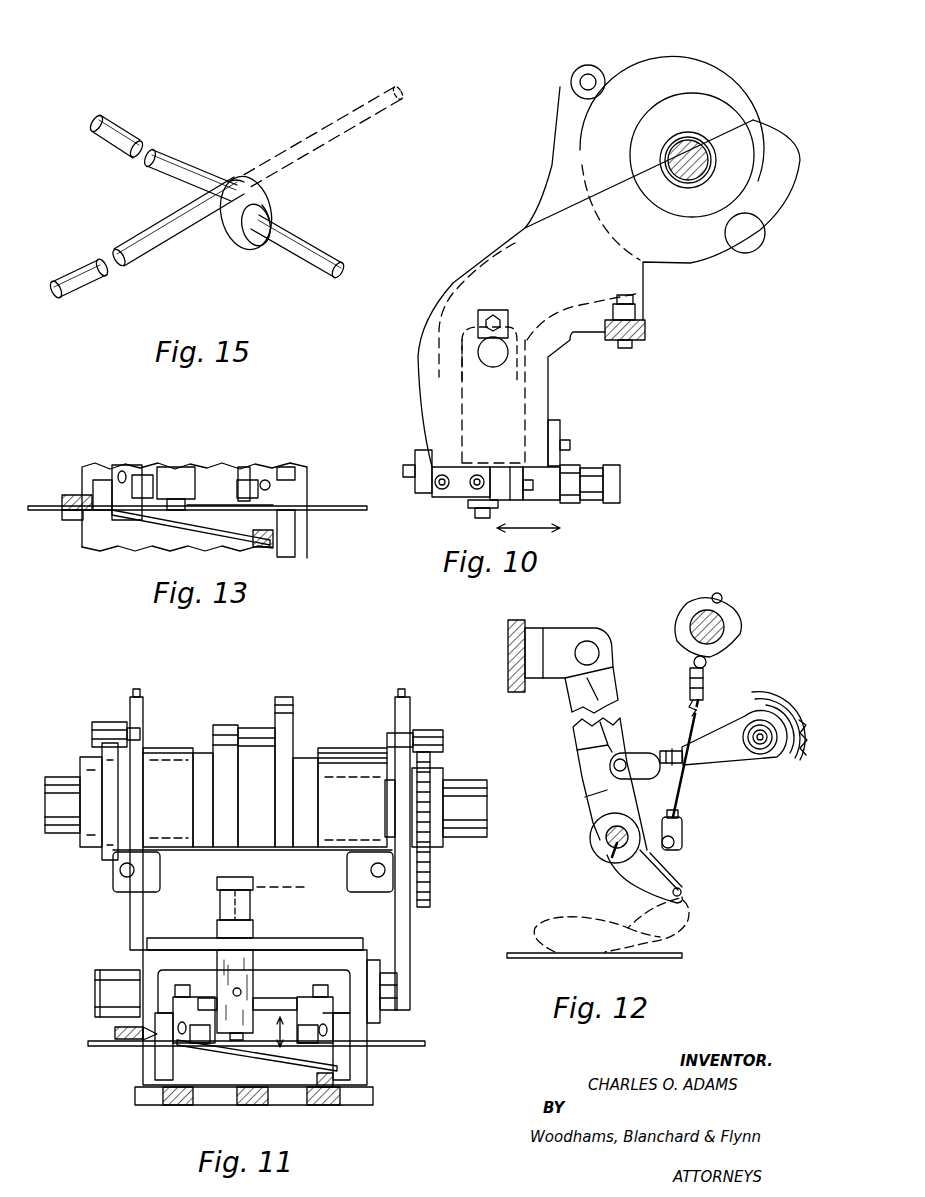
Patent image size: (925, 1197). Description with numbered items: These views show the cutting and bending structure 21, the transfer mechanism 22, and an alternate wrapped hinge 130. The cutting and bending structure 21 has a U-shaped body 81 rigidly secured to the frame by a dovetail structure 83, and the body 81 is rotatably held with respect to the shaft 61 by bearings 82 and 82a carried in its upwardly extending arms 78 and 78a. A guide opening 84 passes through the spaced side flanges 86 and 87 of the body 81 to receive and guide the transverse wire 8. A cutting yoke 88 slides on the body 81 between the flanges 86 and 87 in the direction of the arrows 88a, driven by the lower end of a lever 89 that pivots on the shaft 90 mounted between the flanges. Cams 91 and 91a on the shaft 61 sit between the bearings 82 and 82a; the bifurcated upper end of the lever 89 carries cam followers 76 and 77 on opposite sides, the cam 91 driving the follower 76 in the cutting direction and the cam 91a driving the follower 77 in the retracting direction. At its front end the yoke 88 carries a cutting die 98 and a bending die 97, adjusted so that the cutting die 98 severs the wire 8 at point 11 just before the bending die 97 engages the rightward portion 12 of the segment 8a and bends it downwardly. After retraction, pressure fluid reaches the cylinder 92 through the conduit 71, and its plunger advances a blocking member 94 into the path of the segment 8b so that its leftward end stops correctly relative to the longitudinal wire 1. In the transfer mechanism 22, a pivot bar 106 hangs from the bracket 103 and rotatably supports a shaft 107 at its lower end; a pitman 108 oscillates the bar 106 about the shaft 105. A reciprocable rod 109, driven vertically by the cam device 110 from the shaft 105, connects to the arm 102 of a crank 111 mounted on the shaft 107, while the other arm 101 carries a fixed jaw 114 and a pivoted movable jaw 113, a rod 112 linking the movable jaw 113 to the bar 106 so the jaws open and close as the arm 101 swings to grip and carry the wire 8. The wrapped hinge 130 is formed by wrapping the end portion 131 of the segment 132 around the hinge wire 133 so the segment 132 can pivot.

In FIG. 12, the longitudinal wire 1 is at (613, 960).
In FIG. 10, the transverse wire 8 is at (458, 495).
In FIG. 13, the transverse wire 8 is at (197, 508).
In FIG. 11, the transverse wire 8 is at (412, 1040).
In FIG. 12, the transverse wire 8 is at (553, 948).
In FIG. 13, the wire segment 8a is at (52, 513).
In FIG. 11, the wire segment 8a is at (100, 1047).
In FIG. 13, the wire segment 8b is at (332, 513).
In FIG. 11, the wire segment 8b is at (390, 1047).
In FIG. 11, the cutting point 11 is at (337, 1073).
In FIG. 13, the rightward portion of segment 12 is at (210, 527).
In FIG. 11, the rightward portion of segment 12 is at (260, 1030).
In FIG. 10, the cutting and bending structure 21 is at (498, 246).
In FIG. 11, the cutting and bending structure 21 is at (424, 927).
In FIG. 12, the transfer mechanism 22 is at (564, 741).
In FIG. 10, the shaft 61 is at (713, 157).
In FIG. 11, the shaft 61 is at (458, 797).
In FIG. 12, the shaft 61 is at (791, 718).
In FIG. 11, the conduit 71 is at (279, 887).
In FIG. 10, the cam follower 76 is at (585, 64).
In FIG. 10, the cam follower 77 is at (750, 240).
In FIG. 11, the cam follower 77 is at (223, 733).
In FIG. 11, the upwardly extending arm 78 is at (373, 814).
In FIG. 11, the upwardly extending arm 78a is at (190, 817).
In FIG. 10, the U-shaped body 81 is at (453, 283).
In FIG. 13, the U-shaped body 81 is at (315, 484).
In FIG. 11, the U-shaped body 81 is at (131, 903).
In FIG. 10, the bearing 82 is at (710, 123).
In FIG. 11, the bearing 82 is at (347, 758).
In FIG. 11, the bearing 82a is at (158, 748).
In FIG. 10, the dovetail structure 83 is at (556, 383).
In FIG. 13, the guide opening 84 is at (67, 502).
In FIG. 11, the guide opening 84 is at (110, 1040).
In FIG. 11, the side flange 86 is at (360, 968).
In FIG. 10, the side flange 87 is at (437, 317).
In FIG. 11, the side flange 87 is at (150, 987).
In FIG. 10, the cutting yoke 88 is at (513, 473).
In FIG. 13, the cutting yoke 88 is at (245, 473).
In FIG. 11, the cutting yoke 88 is at (293, 977).
In FIG. 10, the arrows 88a is at (528, 533).
In FIG. 11, the arrows 88a is at (270, 1033).
In FIG. 10, the lever 89 is at (480, 267).
In FIG. 11, the lever 89 is at (257, 733).
In FIG. 10, the shaft 90 is at (517, 338).
In FIG. 10, the cam 91 is at (672, 65).
In FIG. 11, the cam 91 is at (288, 742).
In FIG. 10, the cam 91a is at (700, 262).
In FIG. 11, the cam 91a is at (220, 777).
In FIG. 10, the cylinder 92 is at (590, 467).
In FIG. 11, the cylinder 92 is at (223, 900).
In FIG. 13, the blocking member 94 is at (175, 507).
In FIG. 11, the blocking member 94 is at (230, 1037).
In FIG. 10, the bending die 97 is at (500, 497).
In FIG. 13, the bending die 97 is at (270, 495).
In FIG. 11, the bending die 97 is at (173, 1047).
In FIG. 13, the cutting die 98 is at (110, 482).
In FIG. 11, the cutting die 98 is at (330, 1048).
In FIG. 12, the crank arm 101 is at (640, 882).
In FIG. 12, the crank arm 102 is at (650, 830).
In FIG. 12, the bracket 103 is at (532, 652).
In FIG. 12, the shaft 105 is at (722, 625).
In FIG. 12, the pivot bar 106 is at (590, 770).
In FIG. 12, the shaft 107 is at (613, 843).
In FIG. 12, the pitman 108 is at (642, 752).
In FIG. 12, the reciprocable rod 109 is at (680, 785).
In FIG. 12, the cam device 110 is at (747, 652).
In FIG. 12, the crank 111 is at (605, 827).
In FIG. 12, the rod 112 is at (665, 860).
In FIG. 12, the movable jaw 113 is at (680, 887).
In FIG. 12, the fixed jaw 114 is at (687, 892).
In FIG. 15, the wrapped hinge 130 is at (233, 247).
In FIG. 15, the end portion 131 is at (372, 120).
In FIG. 15, the segment 132 is at (143, 233).
In FIG. 15, the hinge wire 133 is at (313, 263).